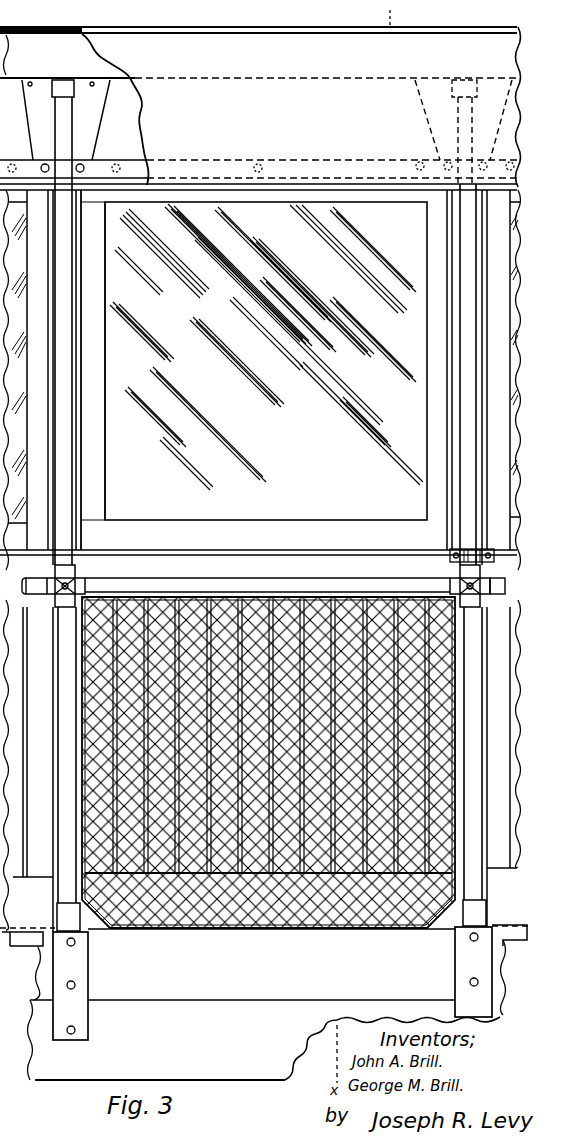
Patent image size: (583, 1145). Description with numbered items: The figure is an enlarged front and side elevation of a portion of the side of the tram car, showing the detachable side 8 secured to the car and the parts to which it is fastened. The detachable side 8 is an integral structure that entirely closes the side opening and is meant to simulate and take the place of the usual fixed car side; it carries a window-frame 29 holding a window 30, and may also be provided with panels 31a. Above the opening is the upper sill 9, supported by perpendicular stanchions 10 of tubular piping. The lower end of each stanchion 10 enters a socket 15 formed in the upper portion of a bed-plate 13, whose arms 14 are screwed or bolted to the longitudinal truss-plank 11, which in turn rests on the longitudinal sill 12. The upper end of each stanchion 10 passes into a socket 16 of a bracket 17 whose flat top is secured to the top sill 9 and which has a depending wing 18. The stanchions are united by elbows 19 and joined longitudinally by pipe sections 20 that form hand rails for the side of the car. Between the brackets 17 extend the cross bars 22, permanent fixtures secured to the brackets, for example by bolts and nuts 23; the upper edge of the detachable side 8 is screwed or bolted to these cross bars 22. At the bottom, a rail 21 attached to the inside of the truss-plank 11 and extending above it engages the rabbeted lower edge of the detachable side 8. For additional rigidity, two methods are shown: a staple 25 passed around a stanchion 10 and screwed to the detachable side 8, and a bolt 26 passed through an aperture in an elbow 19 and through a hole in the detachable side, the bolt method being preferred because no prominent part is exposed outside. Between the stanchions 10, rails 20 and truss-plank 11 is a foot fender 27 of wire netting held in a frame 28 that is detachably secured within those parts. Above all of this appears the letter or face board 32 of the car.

The detachable side 8 is at (130, 186).
The upper sill 9 is at (258, 106).
The stanchion 10 is at (85, 128).
The truss-plank 11 is at (265, 963).
The longitudinal sill 12 is at (267, 1010).
The bed-plate 13 is at (78, 938).
The arm 14 is at (85, 980).
The socket 15 is at (496, 893).
The socket 16 is at (56, 92).
The bracket 17 is at (301, 120).
The depending wing 18 is at (264, 95).
The elbow 19 is at (72, 576).
The pipe section 20 is at (32, 584).
The rail 21 is at (264, 949).
The cross bar 22 is at (258, 158).
The bolts and nuts 23 is at (45, 164).
The staple 25 is at (482, 552).
The bolt 26 is at (95, 580).
The foot fender 27 is at (190, 893).
The frame 28 is at (222, 598).
The window-frame 29 is at (93, 370).
The window 30 is at (266, 361).
The panel 31a is at (262, 742).
The letter board 32 is at (328, 93).